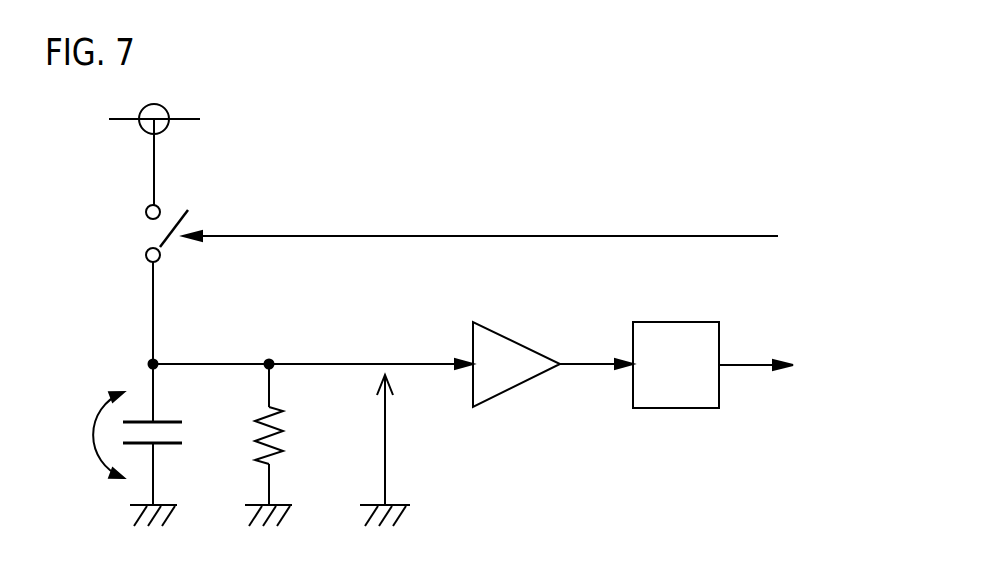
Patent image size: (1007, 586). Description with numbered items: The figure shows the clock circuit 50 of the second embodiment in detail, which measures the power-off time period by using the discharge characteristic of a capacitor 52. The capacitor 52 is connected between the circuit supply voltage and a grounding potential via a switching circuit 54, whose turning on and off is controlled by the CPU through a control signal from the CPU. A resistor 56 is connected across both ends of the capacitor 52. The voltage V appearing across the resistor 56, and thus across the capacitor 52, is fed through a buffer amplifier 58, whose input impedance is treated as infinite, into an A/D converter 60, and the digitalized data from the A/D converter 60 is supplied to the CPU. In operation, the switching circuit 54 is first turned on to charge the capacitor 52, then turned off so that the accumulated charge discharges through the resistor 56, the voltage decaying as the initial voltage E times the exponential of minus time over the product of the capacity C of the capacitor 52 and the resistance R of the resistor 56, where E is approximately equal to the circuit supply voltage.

The clock circuit 50 is at (518, 149).
The capacitor 52 is at (170, 447).
The switching circuit 54 is at (178, 242).
The resistor 56 is at (278, 455).
The buffer amplifier 58 is at (515, 338).
The A/D converter 60 is at (672, 322).